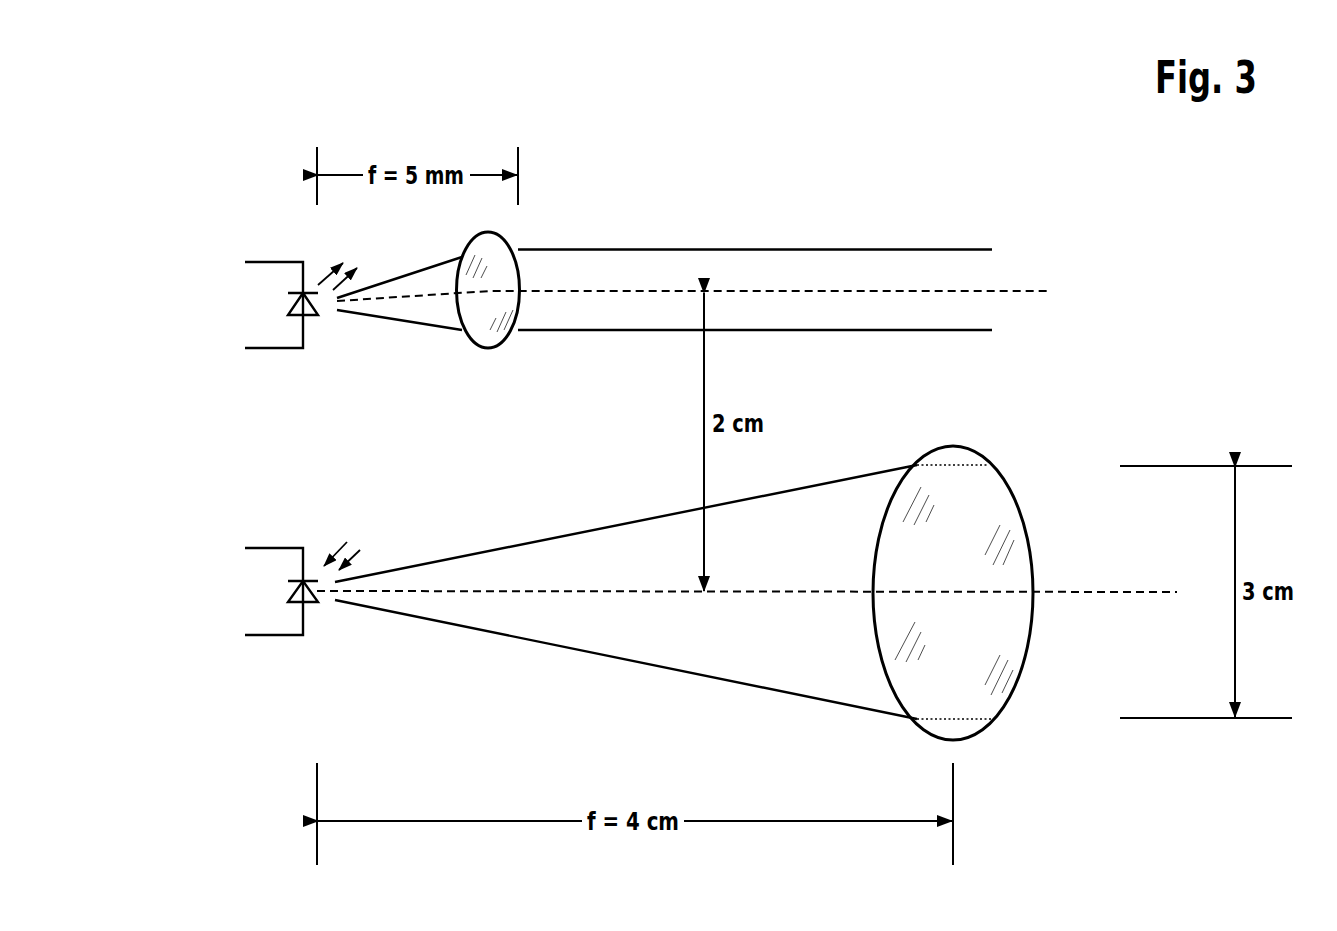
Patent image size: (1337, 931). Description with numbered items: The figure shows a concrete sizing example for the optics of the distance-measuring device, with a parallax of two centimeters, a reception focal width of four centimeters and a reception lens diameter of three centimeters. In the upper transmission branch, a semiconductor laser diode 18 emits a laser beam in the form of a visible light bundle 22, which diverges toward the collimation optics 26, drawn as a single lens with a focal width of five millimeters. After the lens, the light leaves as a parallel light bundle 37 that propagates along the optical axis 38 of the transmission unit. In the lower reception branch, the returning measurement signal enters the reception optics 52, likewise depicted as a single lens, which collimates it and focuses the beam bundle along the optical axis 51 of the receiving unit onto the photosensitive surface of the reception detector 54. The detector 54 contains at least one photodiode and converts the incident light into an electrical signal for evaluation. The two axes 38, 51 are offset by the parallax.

The semiconductor laser diode 18 is at (272, 243).
The light bundle 22 is at (391, 350).
The collimation optics 26 is at (526, 230).
The parallel light bundle 37 is at (948, 265).
The optical axis of transmission unit 38 is at (806, 272).
The optical axis of receiving unit 51 is at (1080, 603).
The reception optics 52 is at (997, 498).
The reception detector 54 is at (280, 652).